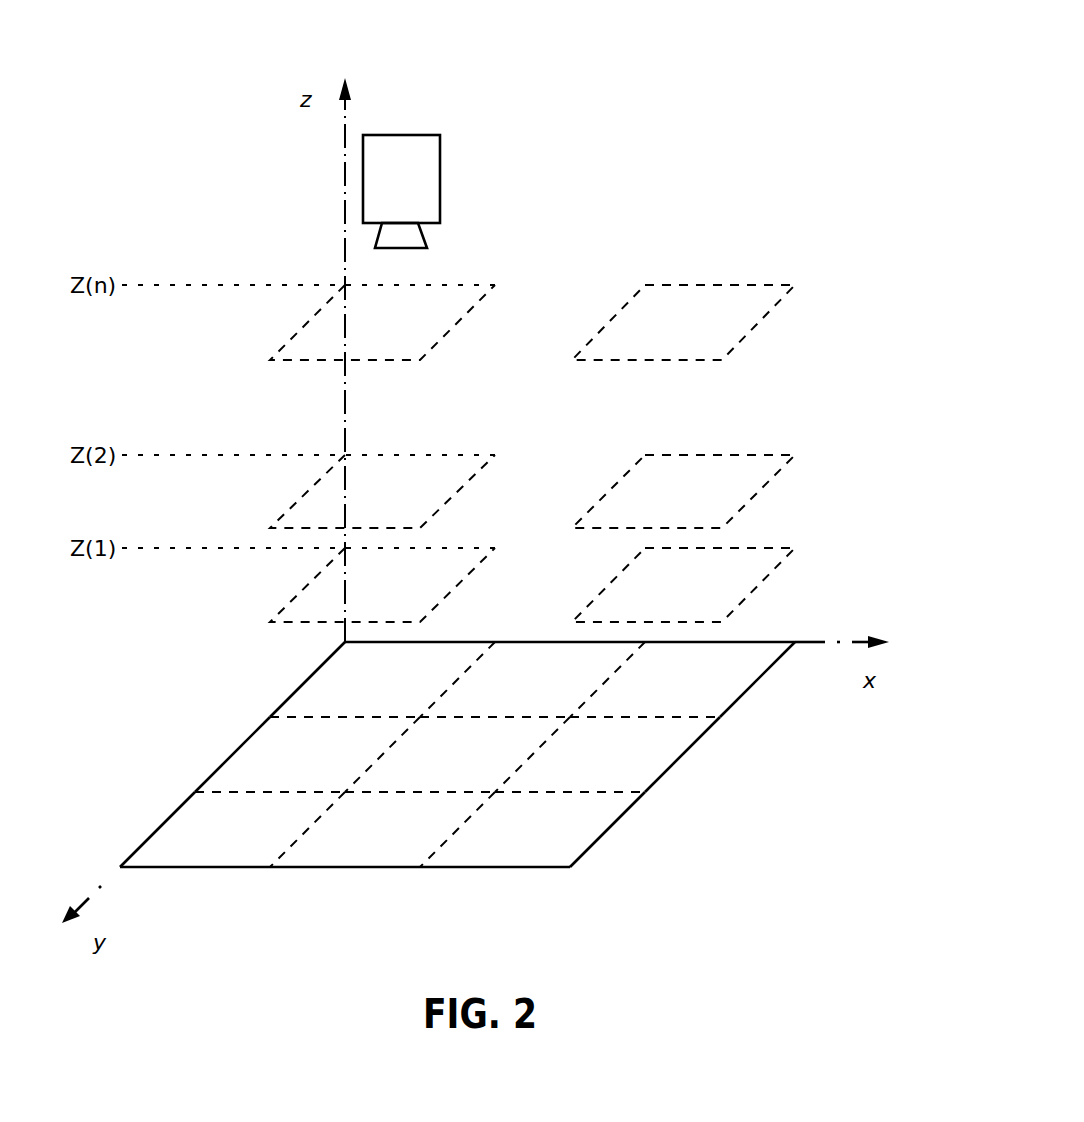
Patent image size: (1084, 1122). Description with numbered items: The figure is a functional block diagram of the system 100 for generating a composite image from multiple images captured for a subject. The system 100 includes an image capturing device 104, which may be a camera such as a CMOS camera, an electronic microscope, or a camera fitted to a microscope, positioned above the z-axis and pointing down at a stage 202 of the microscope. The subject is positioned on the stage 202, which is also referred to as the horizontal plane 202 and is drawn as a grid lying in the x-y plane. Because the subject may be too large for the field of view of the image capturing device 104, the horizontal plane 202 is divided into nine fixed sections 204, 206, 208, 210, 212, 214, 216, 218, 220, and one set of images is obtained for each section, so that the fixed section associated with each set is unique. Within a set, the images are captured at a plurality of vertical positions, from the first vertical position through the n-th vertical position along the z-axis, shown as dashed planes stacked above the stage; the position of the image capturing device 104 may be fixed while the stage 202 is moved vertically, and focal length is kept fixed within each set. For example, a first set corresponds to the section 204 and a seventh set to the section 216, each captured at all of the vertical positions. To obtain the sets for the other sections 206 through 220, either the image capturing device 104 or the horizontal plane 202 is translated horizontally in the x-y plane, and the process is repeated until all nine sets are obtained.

The system 100 is at (820, 50).
The image capturing device 104 is at (440, 173).
The stage 202 is at (457, 754).
The fixed section 204 is at (382, 679).
The fixed section 206 is at (307, 754).
The fixed section 208 is at (232, 829).
The fixed section 210 is at (532, 679).
The fixed section 212 is at (457, 754).
The fixed section 214 is at (382, 829).
The fixed section 216 is at (682, 679).
The fixed section 218 is at (607, 754).
The fixed section 220 is at (532, 829).